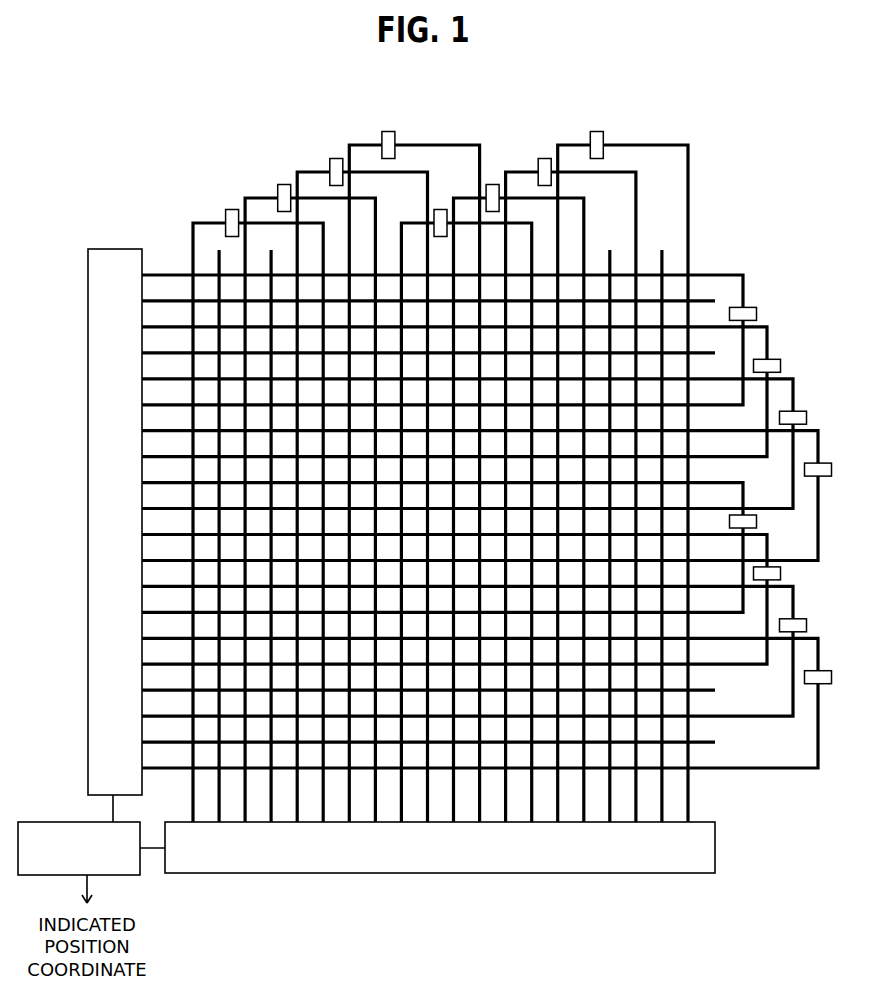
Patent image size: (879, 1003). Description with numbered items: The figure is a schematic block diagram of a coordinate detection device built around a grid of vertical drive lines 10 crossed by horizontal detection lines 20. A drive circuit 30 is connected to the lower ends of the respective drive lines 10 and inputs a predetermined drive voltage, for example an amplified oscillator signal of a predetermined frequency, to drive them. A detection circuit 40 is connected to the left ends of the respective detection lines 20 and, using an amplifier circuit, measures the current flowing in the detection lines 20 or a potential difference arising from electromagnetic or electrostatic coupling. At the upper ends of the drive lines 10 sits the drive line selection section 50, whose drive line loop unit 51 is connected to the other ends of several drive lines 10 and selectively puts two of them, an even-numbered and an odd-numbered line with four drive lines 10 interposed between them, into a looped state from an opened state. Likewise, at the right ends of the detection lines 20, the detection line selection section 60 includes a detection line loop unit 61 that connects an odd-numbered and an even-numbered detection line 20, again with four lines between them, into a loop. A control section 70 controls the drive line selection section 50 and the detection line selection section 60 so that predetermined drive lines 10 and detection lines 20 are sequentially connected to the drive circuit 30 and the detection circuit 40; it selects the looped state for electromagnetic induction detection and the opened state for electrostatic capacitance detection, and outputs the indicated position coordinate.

The drive lines 10 is at (487, 444).
The detection lines 20 is at (158, 271).
The drive circuit 30 is at (715, 840).
The detection circuit 40 is at (111, 247).
The drive line selection section 50 is at (440, 444).
The drive line loop unit 51 is at (225, 205).
The detection line selection section 60 is at (781, 446).
The detection line loop unit 61 is at (757, 314).
The control section 70 is at (50, 820).